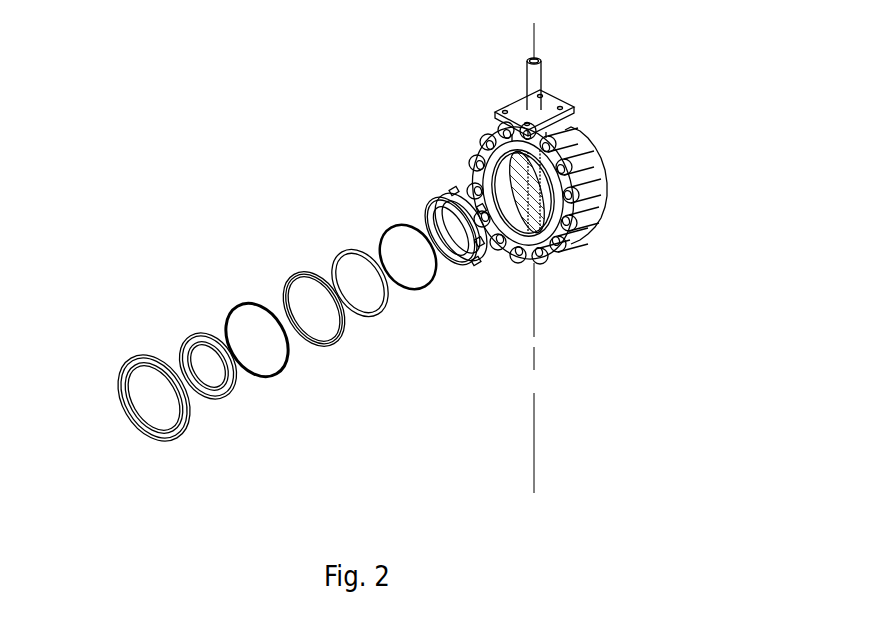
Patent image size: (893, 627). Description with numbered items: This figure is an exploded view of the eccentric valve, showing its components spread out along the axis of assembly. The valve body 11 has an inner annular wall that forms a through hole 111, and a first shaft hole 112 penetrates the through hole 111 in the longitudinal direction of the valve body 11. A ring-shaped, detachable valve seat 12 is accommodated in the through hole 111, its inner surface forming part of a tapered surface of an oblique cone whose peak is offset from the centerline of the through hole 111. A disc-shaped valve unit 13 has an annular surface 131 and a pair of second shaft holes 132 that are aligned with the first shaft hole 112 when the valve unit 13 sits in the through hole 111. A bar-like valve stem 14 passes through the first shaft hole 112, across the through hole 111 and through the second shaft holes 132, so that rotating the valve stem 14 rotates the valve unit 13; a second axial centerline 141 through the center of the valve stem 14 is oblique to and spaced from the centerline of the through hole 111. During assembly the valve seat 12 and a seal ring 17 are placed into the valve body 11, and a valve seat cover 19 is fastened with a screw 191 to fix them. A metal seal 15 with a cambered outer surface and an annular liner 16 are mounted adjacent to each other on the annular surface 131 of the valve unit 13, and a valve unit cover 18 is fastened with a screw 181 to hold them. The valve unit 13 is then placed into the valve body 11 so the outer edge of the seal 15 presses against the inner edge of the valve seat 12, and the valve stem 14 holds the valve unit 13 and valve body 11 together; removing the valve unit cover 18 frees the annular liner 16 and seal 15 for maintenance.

The valve body 11 is at (558, 214).
The through hole 111 is at (575, 248).
The first shaft hole 112 is at (556, 108).
The valve seat 12 is at (333, 343).
The valve unit 13 is at (436, 230).
The annular surface 131 is at (470, 258).
The second shaft holes 132 is at (457, 198).
The valve stem 14 is at (537, 87).
The second axial centerline 141 is at (540, 405).
The seal 15 is at (432, 285).
The annular liner 16 is at (383, 315).
The seal ring 17 is at (285, 372).
The valve unit cover 18 is at (203, 389).
The screw 181 is at (182, 353).
The valve seat cover 19 is at (146, 421).
The screw 191 is at (122, 373).